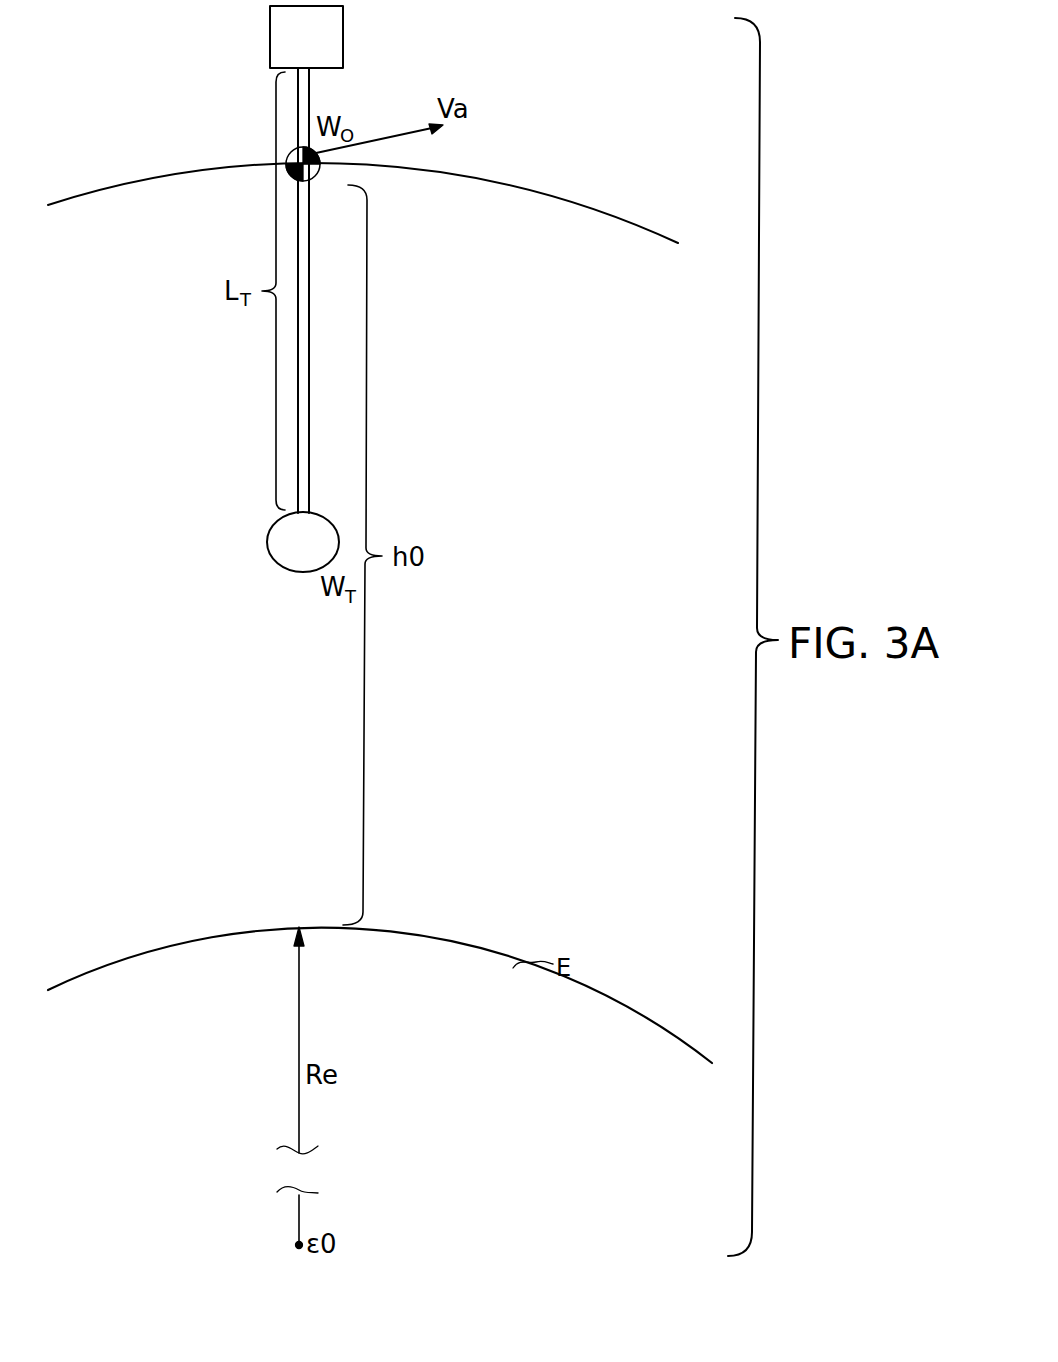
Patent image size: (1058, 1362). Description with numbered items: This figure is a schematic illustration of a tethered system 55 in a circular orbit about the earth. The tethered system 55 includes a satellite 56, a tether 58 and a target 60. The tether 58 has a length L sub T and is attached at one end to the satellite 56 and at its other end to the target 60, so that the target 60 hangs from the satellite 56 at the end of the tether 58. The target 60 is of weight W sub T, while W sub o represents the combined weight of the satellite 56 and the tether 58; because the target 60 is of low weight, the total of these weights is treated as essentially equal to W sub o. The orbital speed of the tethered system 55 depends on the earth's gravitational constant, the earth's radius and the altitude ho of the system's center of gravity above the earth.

The satellite 56 is at (347, 36).
The tether 58 is at (309, 380).
The tethered system 55 is at (340, 291).
The target 60 is at (283, 556).